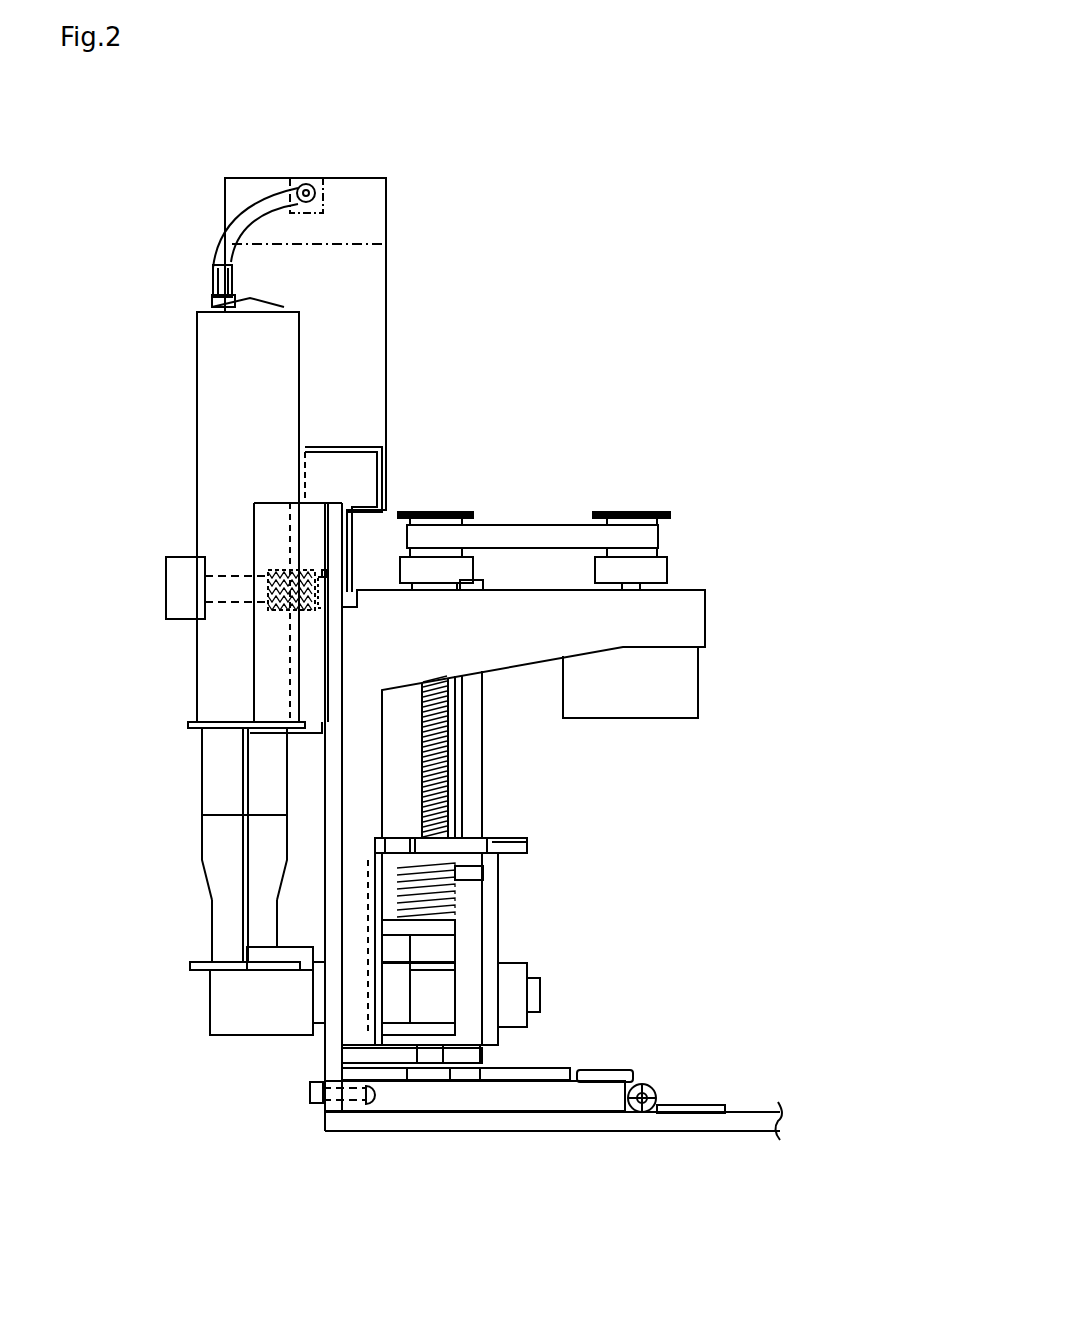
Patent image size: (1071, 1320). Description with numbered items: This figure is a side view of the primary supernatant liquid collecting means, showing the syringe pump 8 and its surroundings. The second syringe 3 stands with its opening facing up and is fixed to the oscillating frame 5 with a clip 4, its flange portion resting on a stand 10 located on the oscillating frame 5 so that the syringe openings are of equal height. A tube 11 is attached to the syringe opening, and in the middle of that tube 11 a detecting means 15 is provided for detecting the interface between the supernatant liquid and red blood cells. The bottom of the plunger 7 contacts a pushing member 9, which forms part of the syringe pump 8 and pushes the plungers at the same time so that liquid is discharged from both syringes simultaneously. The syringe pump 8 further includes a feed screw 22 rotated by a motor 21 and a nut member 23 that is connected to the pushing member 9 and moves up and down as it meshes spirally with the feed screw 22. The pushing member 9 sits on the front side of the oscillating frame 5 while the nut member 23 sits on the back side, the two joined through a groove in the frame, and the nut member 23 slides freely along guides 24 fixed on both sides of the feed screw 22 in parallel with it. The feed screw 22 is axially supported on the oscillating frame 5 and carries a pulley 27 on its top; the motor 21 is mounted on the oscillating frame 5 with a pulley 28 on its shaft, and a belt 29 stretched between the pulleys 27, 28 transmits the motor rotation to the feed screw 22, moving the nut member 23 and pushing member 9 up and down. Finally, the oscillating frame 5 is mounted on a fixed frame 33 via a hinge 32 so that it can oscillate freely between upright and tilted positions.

The second syringe 3 is at (218, 453).
The clip 4 is at (192, 586).
The oscillating frame 5 is at (332, 1058).
The plunger 7 is at (215, 935).
The syringe pump 8 is at (680, 617).
The pushing member 9 is at (230, 1015).
The stand 10 is at (278, 738).
The tube 11 is at (212, 272).
The detecting means 15 is at (366, 215).
The motor 21 is at (699, 716).
The feed screw 22 is at (450, 723).
The nut member 23 is at (518, 990).
The guides 24 is at (473, 782).
The pulley 27 is at (430, 512).
The pulley 28 is at (618, 512).
The belt 29 is at (510, 527).
The hinge 32 is at (638, 1085).
The fixed frame 33 is at (555, 1133).